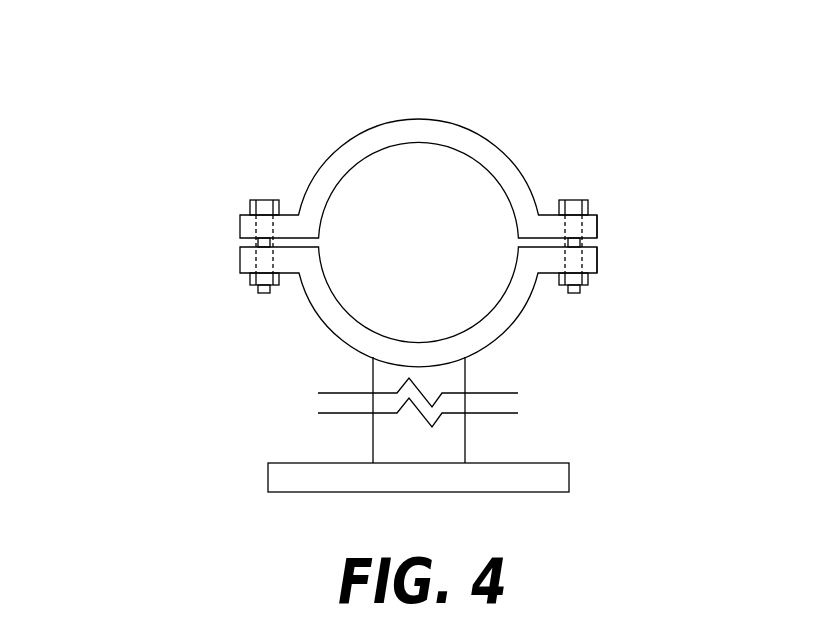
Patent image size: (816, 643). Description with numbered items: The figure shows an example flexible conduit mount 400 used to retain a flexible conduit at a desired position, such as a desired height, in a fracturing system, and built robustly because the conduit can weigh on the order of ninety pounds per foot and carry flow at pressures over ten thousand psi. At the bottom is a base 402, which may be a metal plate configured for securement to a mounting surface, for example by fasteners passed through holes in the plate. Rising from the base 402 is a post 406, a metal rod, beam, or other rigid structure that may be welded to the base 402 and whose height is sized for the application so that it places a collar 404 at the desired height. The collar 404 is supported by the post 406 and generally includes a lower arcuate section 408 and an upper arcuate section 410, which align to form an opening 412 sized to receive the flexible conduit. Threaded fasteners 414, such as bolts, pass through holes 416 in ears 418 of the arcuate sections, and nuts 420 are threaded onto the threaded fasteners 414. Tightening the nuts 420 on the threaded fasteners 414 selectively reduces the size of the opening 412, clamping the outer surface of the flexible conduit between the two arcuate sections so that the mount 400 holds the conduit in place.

The flexible conduit mount 400 is at (357, 264).
The base 402 is at (343, 449).
The collar 404 is at (204, 227).
The post 406 is at (317, 401).
The lower arcuate section 408 is at (463, 314).
The upper arcuate section 410 is at (463, 173).
The opening 412 is at (293, 160).
The threaded fasteners 414 is at (624, 190).
The holes 416 is at (627, 236).
The ears 418 is at (649, 244).
The nuts 420 is at (624, 295).